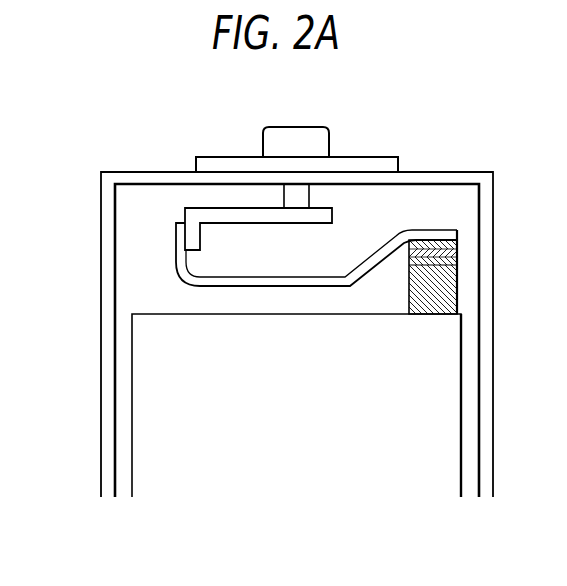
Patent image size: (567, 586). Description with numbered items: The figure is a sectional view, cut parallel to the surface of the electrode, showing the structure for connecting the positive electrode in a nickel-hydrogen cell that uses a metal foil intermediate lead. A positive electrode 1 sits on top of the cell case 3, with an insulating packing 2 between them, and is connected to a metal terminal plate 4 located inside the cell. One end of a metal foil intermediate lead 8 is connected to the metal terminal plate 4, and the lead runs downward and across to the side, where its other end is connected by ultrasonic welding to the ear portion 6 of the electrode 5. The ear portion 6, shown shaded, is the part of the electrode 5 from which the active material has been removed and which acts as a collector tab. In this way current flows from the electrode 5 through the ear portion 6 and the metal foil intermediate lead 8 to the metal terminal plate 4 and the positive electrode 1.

The positive electrode 1 is at (315, 135).
The insulating packing 2 is at (382, 160).
The cell case 3 is at (484, 213).
The metal terminal plate 4 is at (292, 213).
The electrode 5 is at (163, 392).
The ear portion 6 is at (433, 290).
The metal foil intermediate lead 8 is at (273, 279).